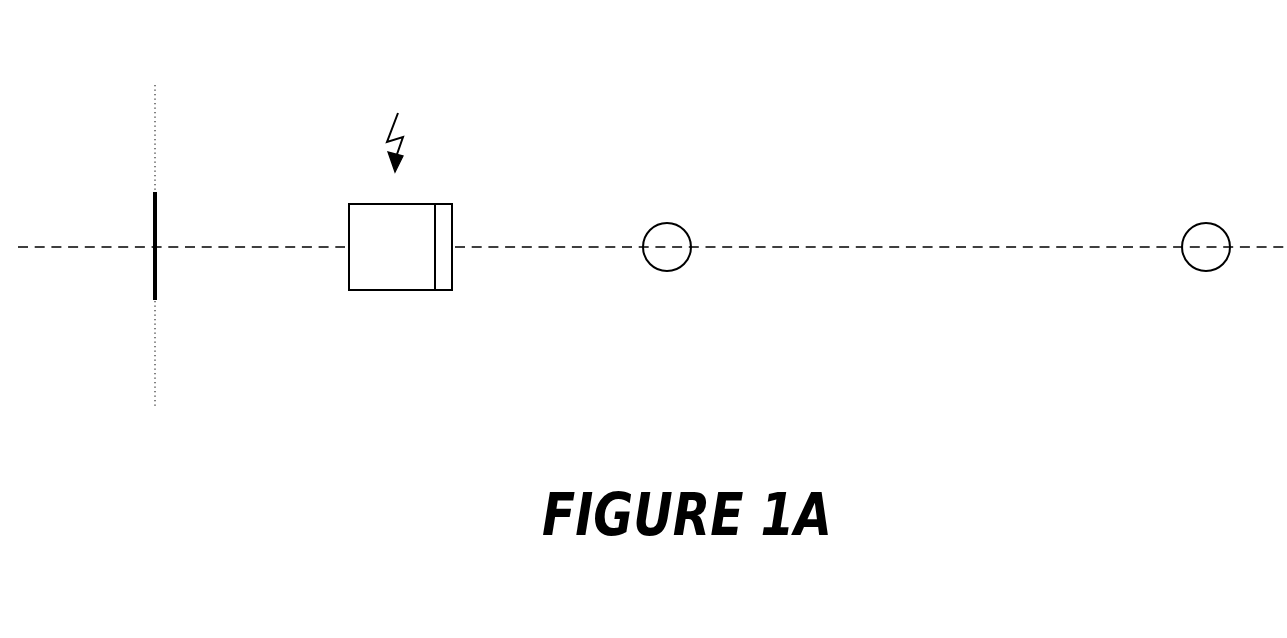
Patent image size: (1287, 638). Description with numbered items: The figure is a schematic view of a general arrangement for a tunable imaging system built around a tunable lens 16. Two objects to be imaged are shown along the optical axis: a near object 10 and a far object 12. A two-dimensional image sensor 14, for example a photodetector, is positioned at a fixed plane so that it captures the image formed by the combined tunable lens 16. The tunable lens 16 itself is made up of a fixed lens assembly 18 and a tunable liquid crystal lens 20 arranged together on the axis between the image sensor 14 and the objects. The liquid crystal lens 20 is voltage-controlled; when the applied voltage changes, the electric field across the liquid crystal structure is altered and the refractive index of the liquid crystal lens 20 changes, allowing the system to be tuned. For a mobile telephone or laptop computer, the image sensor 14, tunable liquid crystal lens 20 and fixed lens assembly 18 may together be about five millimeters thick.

The near object 10 is at (677, 232).
The far object 12 is at (1194, 237).
The image sensor 14 is at (157, 206).
The tunable lens 16 is at (399, 127).
The fixed lens assembly 18 is at (377, 283).
The tunable liquid crystal lens 20 is at (445, 213).